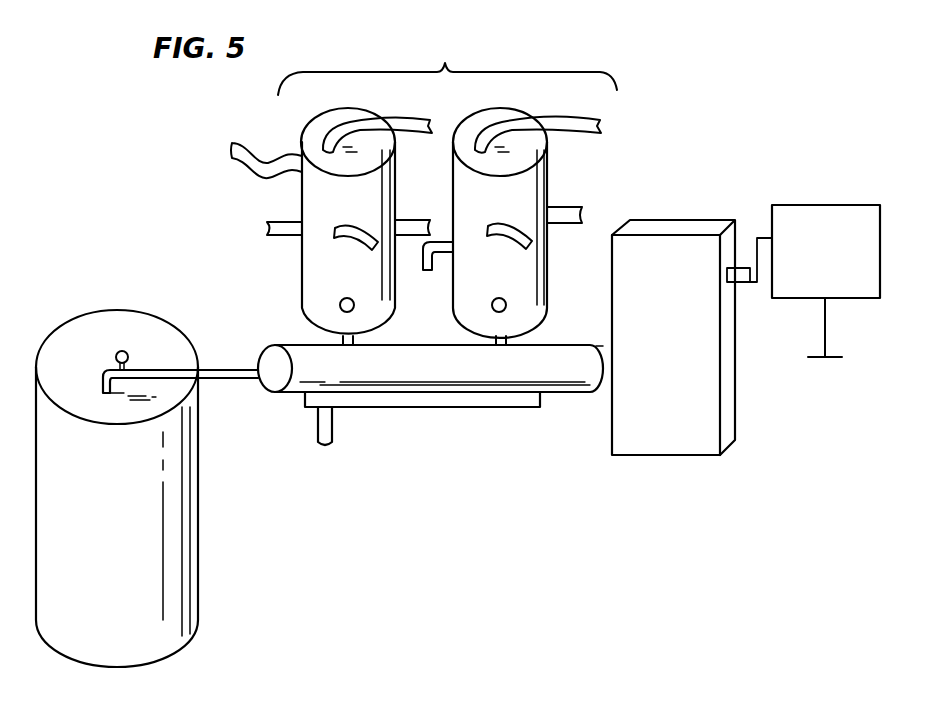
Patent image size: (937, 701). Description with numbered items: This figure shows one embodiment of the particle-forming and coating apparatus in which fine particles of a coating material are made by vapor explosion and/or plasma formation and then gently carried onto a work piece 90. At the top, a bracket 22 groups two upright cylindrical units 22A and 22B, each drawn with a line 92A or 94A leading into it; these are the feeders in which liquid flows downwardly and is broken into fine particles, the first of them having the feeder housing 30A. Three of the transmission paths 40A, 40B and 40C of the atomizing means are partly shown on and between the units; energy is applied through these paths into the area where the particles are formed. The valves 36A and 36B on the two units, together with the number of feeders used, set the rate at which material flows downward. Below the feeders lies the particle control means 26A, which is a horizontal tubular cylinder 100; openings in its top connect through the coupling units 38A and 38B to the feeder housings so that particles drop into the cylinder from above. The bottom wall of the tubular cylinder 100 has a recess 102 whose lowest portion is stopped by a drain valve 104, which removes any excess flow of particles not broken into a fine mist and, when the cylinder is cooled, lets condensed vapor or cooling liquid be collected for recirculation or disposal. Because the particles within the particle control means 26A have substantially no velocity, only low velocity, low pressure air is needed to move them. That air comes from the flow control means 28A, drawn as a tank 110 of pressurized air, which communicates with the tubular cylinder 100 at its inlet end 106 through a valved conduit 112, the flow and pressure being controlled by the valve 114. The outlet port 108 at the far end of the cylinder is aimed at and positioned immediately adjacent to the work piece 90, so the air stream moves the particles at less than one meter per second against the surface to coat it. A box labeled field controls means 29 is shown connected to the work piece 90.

The tank assembly 22 is at (447, 69).
The first tank 22A is at (303, 193).
The second tank 22B is at (547, 178).
The supply hose 92A is at (418, 92).
The flexible hose 94A is at (243, 146).
The transmission path 40A is at (285, 227).
The transmission path 40B is at (362, 228).
The transmission path 40C is at (413, 221).
The feeder housing 30A is at (304, 259).
The valve 36A is at (353, 299).
The valve 36B is at (504, 299).
The coupling unit 38A is at (356, 343).
The coupling unit 38B is at (512, 343).
The tubular cylinder 100 is at (570, 379).
The recess 102 is at (446, 399).
The drain valve 104 is at (328, 430).
The inlet 106 is at (270, 386).
The outlet port 108 is at (603, 345).
The storage tank 110 is at (175, 530).
The valved conduit 112 is at (238, 376).
The valve 114 is at (119, 352).
The particle control means 26A is at (480, 408).
The flow control means 28A is at (204, 592).
The work piece 90 is at (673, 442).
The field controls means 29 is at (827, 205).